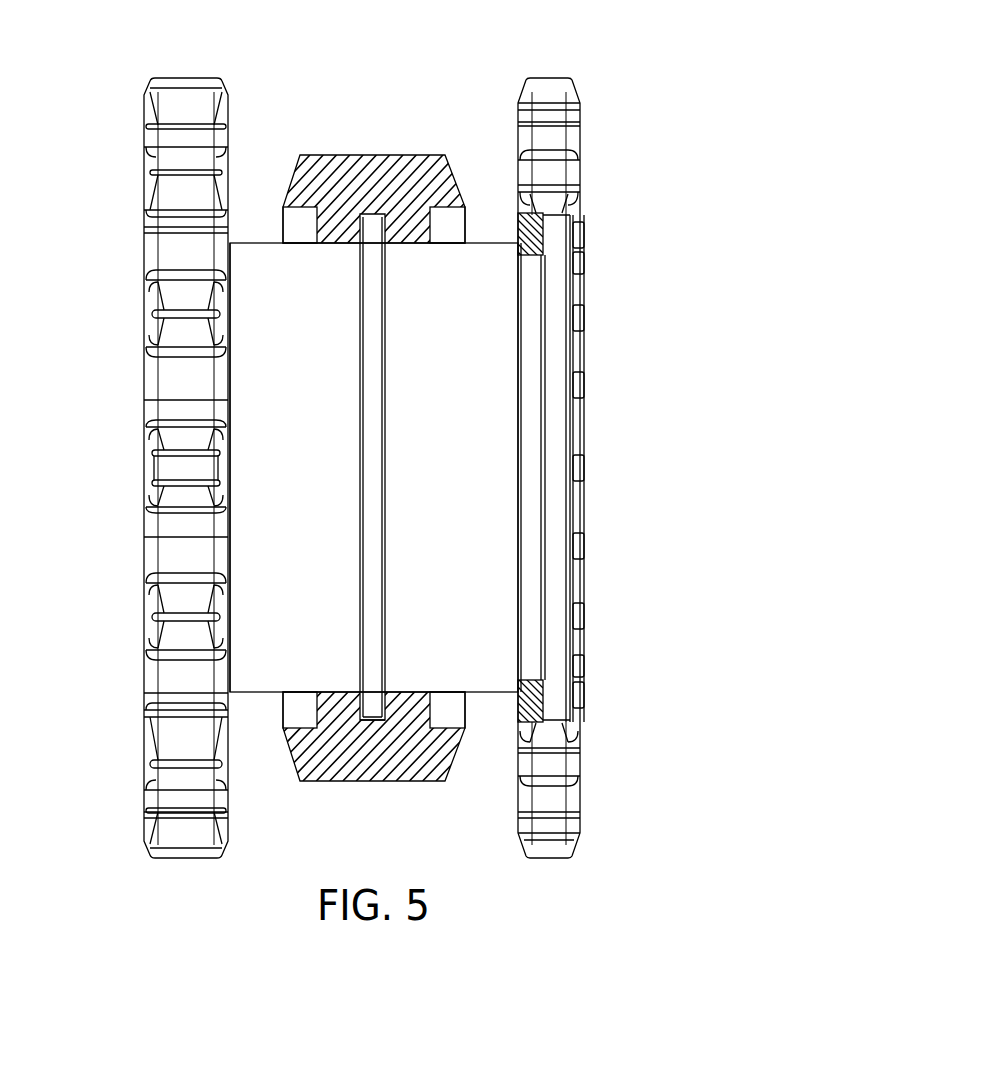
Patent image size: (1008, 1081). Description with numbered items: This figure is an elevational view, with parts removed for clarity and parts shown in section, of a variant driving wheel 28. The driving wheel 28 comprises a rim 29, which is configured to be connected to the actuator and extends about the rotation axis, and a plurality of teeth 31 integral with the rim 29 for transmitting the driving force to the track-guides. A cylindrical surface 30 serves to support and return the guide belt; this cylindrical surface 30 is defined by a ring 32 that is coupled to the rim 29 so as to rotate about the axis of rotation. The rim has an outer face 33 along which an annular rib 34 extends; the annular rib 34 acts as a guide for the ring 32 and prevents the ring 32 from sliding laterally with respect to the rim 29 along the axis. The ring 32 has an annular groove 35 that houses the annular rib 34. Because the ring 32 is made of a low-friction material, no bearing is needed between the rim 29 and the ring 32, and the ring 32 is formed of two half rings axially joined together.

The driving wheel 28 is at (634, 132).
The rim 29 is at (475, 516).
The cylindrical surface 30 is at (365, 152).
The teeth 31 is at (140, 172).
The ring 32 is at (418, 165).
The outer face 33 is at (249, 240).
The annular rib 34 is at (368, 474).
The annular groove 35 is at (374, 704).